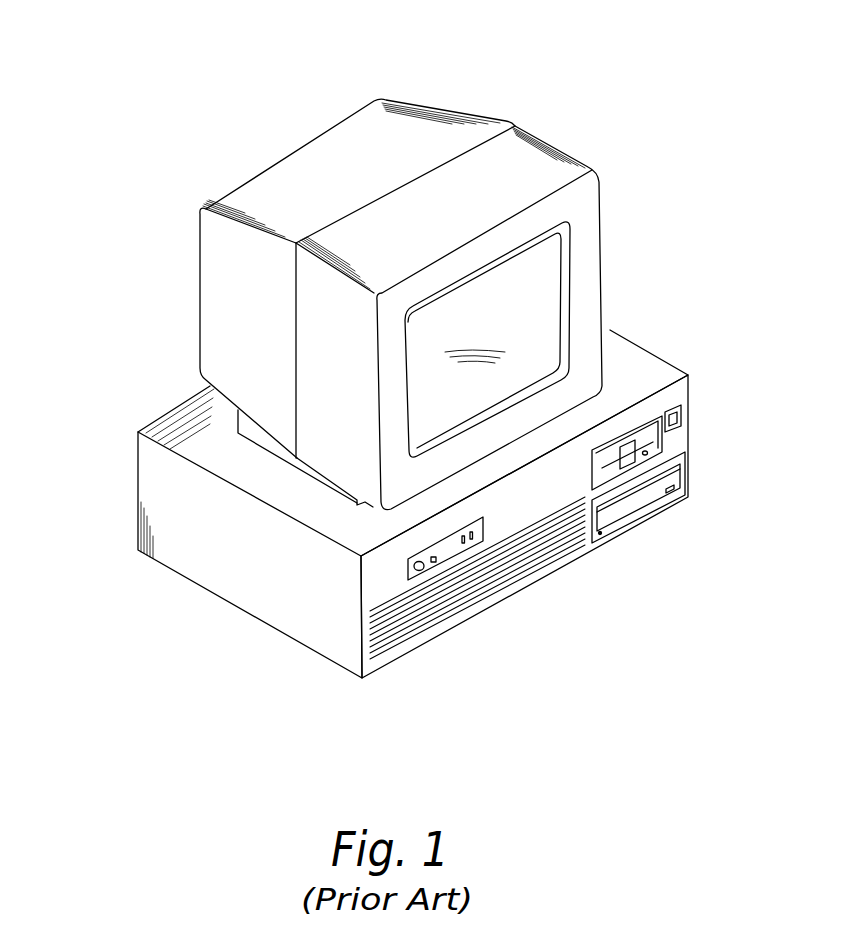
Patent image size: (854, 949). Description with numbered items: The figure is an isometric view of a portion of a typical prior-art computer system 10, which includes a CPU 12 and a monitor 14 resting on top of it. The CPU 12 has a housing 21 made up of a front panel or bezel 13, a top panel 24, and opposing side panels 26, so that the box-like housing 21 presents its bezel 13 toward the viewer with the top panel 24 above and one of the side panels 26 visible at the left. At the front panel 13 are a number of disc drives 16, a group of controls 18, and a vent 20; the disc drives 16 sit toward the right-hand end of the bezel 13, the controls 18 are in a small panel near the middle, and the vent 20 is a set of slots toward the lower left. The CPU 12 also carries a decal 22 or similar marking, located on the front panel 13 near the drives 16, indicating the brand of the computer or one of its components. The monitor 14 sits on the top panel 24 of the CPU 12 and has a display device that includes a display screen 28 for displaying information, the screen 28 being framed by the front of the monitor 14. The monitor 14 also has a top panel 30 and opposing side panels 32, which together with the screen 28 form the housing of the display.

The computer system 10 is at (135, 90).
The CPU 12 is at (108, 510).
The front panel or bezel 13 is at (518, 503).
The monitor 14 is at (168, 247).
The disc drives 16 is at (662, 443).
The controls 18 is at (447, 552).
The vent 20 is at (405, 625).
The housing 21 is at (135, 542).
The decal 22 is at (680, 415).
The top panel 24 is at (250, 478).
The side panels 26 is at (672, 362).
The display screen 28 is at (495, 315).
The top panel 30 is at (360, 185).
The side panel 32 is at (606, 213).